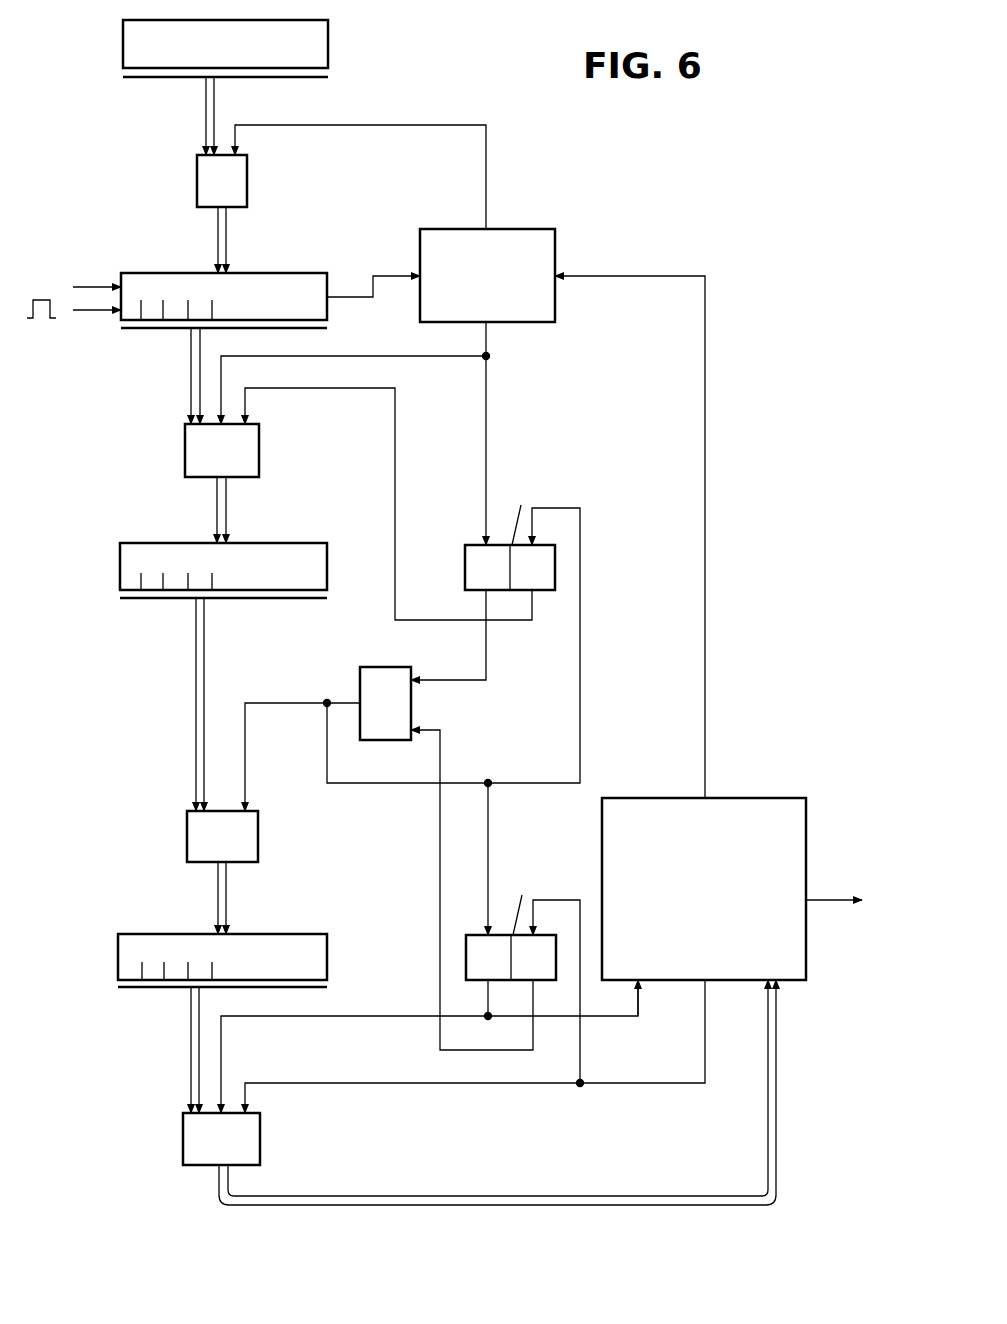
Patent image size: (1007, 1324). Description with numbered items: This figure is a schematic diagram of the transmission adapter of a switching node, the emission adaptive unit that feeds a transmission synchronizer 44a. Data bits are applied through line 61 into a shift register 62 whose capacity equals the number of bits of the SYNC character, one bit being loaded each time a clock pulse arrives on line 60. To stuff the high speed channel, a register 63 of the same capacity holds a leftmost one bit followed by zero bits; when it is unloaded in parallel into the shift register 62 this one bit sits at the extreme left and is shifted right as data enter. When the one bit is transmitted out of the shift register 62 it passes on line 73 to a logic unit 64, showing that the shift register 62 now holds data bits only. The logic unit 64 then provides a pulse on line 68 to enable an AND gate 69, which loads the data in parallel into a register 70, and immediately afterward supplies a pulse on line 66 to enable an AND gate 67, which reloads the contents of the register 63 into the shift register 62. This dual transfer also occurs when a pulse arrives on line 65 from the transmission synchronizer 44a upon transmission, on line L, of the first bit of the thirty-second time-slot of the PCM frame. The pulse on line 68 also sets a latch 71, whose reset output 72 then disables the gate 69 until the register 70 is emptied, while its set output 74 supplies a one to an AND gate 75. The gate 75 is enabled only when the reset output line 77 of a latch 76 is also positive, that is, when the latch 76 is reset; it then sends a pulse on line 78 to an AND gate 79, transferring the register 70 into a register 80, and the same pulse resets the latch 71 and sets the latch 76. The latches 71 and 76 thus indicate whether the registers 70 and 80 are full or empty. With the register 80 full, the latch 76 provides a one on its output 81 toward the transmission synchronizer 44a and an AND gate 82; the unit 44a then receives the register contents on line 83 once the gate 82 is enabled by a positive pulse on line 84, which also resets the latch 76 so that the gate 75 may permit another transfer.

The register 63 is at (330, 42).
The AND gate 67 is at (247, 182).
The line 66 is at (405, 116).
The shift register 62 is at (281, 273).
The line 61 is at (88, 287).
The line 60 is at (95, 312).
The line 73 is at (355, 295).
The logic unit 64 is at (530, 229).
The line 65 is at (620, 274).
The line 68 is at (488, 346).
The AND gate 69 is at (259, 457).
The register 70 is at (344, 505).
The reset output 72 is at (397, 502).
The latch 71 is at (465, 570).
The set output 74 is at (488, 672).
The AND gate 75 is at (372, 667).
The line 78 is at (300, 703).
The reset output line 77 is at (440, 830).
The AND gate 79 is at (187, 830).
The register 80 is at (292, 934).
The output 81 is at (486, 1002).
The latch 76 is at (472, 935).
The line 84 is at (625, 1083).
The transmission synchronizer 44a is at (760, 798).
The AND gate 82 is at (260, 1130).
The line 83 is at (515, 1196).